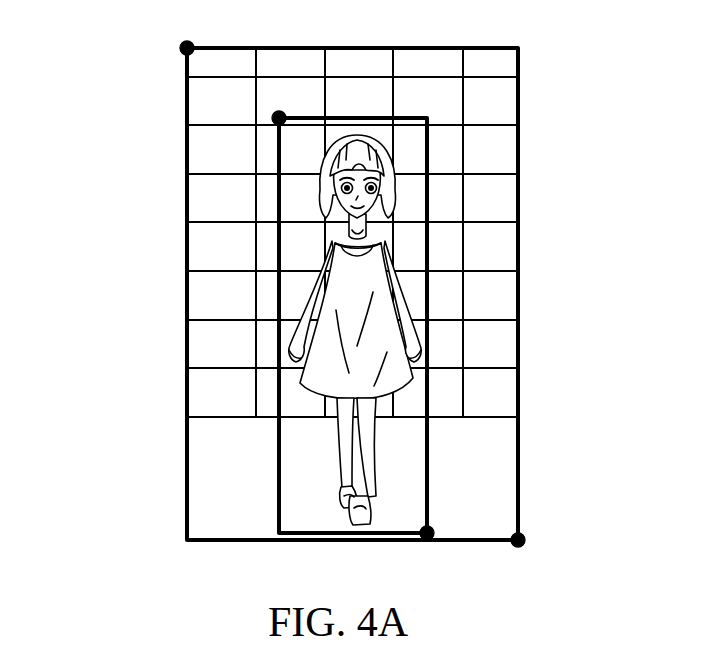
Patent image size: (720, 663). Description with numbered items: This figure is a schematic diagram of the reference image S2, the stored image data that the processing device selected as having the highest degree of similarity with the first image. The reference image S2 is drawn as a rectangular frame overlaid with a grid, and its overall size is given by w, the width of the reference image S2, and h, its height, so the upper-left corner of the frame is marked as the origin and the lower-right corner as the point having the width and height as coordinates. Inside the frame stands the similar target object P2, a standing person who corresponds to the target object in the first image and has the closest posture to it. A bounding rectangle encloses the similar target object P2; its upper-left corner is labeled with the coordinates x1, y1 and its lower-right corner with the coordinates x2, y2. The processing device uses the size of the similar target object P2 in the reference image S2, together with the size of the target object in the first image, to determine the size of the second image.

The reference image S2 is at (354, 47).
The similar target object P2 is at (395, 193).